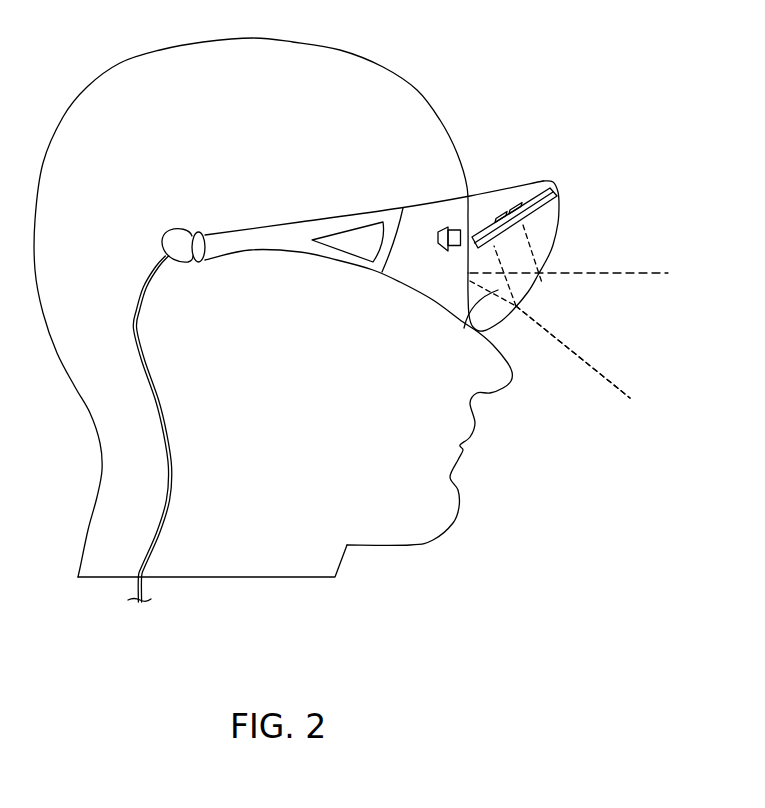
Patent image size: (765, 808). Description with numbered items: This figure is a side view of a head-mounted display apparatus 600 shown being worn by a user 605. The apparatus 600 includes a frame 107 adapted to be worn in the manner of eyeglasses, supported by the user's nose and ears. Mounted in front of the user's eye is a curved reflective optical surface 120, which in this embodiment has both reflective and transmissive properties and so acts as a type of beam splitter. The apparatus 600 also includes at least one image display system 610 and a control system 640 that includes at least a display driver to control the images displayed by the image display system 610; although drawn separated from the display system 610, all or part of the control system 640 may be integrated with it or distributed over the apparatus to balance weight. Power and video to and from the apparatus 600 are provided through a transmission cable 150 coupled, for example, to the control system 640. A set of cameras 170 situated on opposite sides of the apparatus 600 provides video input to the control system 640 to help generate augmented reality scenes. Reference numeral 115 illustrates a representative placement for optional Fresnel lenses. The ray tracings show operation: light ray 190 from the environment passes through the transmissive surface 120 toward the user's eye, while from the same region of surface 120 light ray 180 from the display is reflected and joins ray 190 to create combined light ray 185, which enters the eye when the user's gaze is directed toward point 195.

The user 605 is at (117, 75).
The frame 107 is at (305, 223).
The control system 640 is at (512, 203).
The head-mounted display apparatus 600 is at (548, 201).
The image display system 610 is at (557, 198).
The Fresnel lens placement 115 is at (535, 213).
The reflective optical surface 120 is at (548, 250).
The light ray 180 is at (505, 291).
The point 195 is at (522, 306).
The combined light ray 185 is at (464, 328).
The light ray 190 is at (580, 357).
The cameras 170 is at (436, 240).
The transmission cable 150 is at (168, 428).